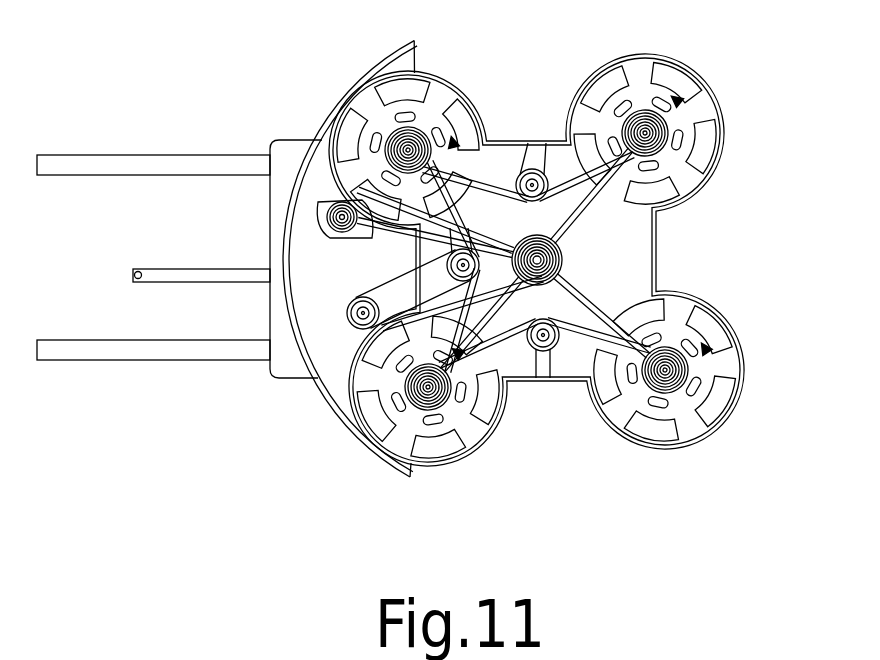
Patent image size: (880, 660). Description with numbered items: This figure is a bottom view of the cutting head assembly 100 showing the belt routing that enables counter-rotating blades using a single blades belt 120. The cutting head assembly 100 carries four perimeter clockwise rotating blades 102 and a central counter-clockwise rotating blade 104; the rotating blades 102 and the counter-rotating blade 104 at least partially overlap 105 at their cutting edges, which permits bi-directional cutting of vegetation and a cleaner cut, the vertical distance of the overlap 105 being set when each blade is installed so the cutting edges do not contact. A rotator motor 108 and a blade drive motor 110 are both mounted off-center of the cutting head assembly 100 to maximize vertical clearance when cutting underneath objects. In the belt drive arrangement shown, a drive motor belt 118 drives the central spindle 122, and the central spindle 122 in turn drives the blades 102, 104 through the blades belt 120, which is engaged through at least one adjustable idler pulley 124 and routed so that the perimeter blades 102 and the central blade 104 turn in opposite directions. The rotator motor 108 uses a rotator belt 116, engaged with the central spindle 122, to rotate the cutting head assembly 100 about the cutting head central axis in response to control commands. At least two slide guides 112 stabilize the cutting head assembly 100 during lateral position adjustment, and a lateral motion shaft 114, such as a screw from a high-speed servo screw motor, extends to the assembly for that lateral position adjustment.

The cutting head assembly 100 is at (580, 440).
The perimeter clockwise rotating blades 102 is at (530, 261).
The central counter-clockwise rotating blade 104 is at (558, 260).
The overlap 105 is at (650, 285).
The rotator motor 108 is at (333, 205).
The blade drive motor 110 is at (312, 398).
The slide guides 112 is at (112, 166).
The lateral motion shaft 114 is at (163, 272).
The rotator belt 116 is at (455, 235).
The drive motor belt 118 is at (400, 297).
The blades belt 120 is at (661, 204).
The central spindle 122 is at (644, 292).
The adjustable idler pulley 124 is at (533, 170).